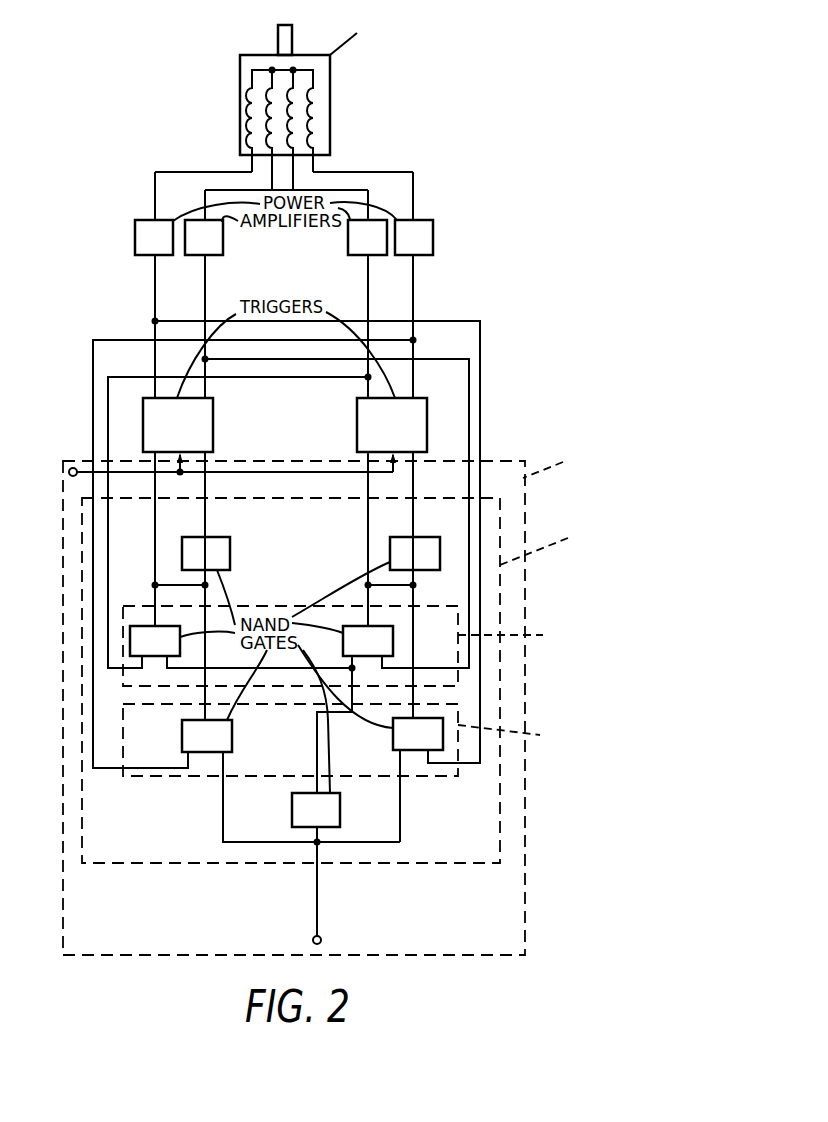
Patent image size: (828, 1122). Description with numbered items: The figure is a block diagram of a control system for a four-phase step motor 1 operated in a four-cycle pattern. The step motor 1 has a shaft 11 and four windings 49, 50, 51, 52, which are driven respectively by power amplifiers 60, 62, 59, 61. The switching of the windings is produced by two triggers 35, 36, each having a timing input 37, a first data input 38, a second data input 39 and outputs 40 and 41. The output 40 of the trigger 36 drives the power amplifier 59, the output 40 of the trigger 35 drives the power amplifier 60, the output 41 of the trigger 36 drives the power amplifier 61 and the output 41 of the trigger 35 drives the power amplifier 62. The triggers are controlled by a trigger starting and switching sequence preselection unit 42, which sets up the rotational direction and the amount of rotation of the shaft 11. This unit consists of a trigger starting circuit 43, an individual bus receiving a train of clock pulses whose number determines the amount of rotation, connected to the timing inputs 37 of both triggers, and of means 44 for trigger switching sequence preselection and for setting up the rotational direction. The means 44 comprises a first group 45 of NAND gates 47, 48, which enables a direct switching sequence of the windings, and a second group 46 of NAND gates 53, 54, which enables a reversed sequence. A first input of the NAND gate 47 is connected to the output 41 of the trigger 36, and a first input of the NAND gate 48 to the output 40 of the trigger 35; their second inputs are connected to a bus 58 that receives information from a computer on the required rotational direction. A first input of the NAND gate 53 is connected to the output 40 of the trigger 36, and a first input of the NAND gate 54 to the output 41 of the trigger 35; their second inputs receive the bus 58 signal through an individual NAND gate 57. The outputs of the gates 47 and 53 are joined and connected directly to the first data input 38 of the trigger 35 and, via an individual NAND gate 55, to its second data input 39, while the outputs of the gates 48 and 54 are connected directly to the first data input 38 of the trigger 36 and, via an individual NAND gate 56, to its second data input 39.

The step motor 1 is at (336, 74).
The shaft 11 is at (292, 35).
The winding 49 is at (247, 126).
The winding 50 is at (268, 99).
The winding 51 is at (291, 113).
The winding 52 is at (309, 123).
The power amplifier 59 is at (367, 237).
The power amplifier 60 is at (154, 237).
The power amplifier 61 is at (414, 237).
The power amplifier 62 is at (204, 237).
The trigger 35 is at (178, 425).
The trigger 36 is at (392, 425).
The timing input 37 is at (181, 471).
The first data input 38 is at (155, 466).
The second data input 39 is at (207, 466).
The output 40 is at (155, 388).
The output 41 is at (205, 388).
The trigger starting and switching sequence preselection unit 42 is at (530, 507).
The trigger starting circuit 43 is at (85, 463).
The means for trigger switching sequence preselection 44 is at (510, 591).
The first group of NAND gates 45 is at (156, 784).
The second group of NAND gates 46 is at (294, 598).
The NAND gate 47 is at (291, 781).
The NAND gate 48 is at (418, 780).
The NAND gate 53 is at (241, 646).
The NAND gate 54 is at (355, 709).
The individual NAND gate 55 is at (206, 553).
The individual NAND gate 56 is at (415, 553).
The individual NAND gate 57 is at (316, 819).
The bus 58 is at (317, 908).